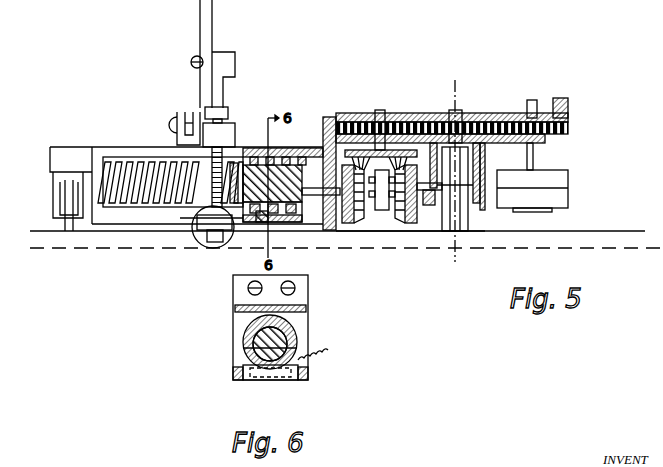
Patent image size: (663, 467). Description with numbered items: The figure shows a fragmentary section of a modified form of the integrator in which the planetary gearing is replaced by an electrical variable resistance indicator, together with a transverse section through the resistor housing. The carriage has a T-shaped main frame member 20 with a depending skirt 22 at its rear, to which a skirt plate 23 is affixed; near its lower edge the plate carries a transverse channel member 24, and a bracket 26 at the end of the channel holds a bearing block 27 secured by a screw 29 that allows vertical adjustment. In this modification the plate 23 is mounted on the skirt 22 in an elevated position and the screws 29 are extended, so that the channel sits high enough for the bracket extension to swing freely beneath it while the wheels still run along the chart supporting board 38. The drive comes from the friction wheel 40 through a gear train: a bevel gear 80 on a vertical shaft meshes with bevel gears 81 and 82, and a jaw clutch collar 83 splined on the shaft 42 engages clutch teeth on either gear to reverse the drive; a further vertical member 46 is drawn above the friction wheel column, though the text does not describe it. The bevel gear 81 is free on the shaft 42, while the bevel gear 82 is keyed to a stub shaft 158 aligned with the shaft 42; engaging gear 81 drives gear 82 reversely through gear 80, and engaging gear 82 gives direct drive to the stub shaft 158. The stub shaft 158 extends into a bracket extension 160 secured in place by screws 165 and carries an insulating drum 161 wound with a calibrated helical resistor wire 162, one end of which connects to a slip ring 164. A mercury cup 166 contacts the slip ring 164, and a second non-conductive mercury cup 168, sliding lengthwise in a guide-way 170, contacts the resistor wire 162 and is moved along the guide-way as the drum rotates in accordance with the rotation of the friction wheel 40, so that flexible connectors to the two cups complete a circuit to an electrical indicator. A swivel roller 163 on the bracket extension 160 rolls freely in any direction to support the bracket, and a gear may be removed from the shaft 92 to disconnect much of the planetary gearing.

In FIG. 5, the main frame member 20 is at (237, 58).
In FIG. 5, the depending skirt 22 is at (222, 88).
In FIG. 5, the skirt plate 23 is at (209, 22).
In FIG. 5, the transverse channel member 24 is at (183, 111).
In FIG. 5, the bracket 26 is at (235, 134).
In FIG. 5, the bearing block 27 is at (213, 230).
In FIG. 5, the screw 29 is at (229, 118).
In FIG. 5, the chart supporting board 38 is at (563, 231).
In FIG. 5, the friction wheel 40 is at (459, 232).
In FIG. 5, the shaft 42 is at (427, 205).
In FIG. 5, the vertical shaft 46 is at (460, 113).
In FIG. 5, the bevel gear 80 is at (377, 113).
In FIG. 5, the bevel gear 81 is at (409, 225).
In FIG. 5, the bevel gear 82 is at (346, 225).
In FIG. 5, the jaw clutch collar 83 is at (382, 212).
In FIG. 5, the shaft 92 is at (531, 100).
In FIG. 5, the stub shaft 158 is at (336, 231).
In FIG. 5, the bracket extension 160 is at (158, 147).
In FIG. 5, the insulating drum 161 is at (186, 214).
In FIG. 5, the helical resistor wire 162 is at (161, 214).
In FIG. 5, the swivel roller 163 is at (62, 215).
In FIG. 5, the slip ring 164 is at (309, 151).
In FIG. 5, the screw 165 is at (323, 131).
In FIG. 5, the mercury cup 166 is at (299, 223).
In FIG. 5, the mercury cup 168 is at (261, 224).
In FIG. 6, the mercury cup 168 is at (293, 383).
In FIG. 6, the guide-way 170 is at (243, 381).